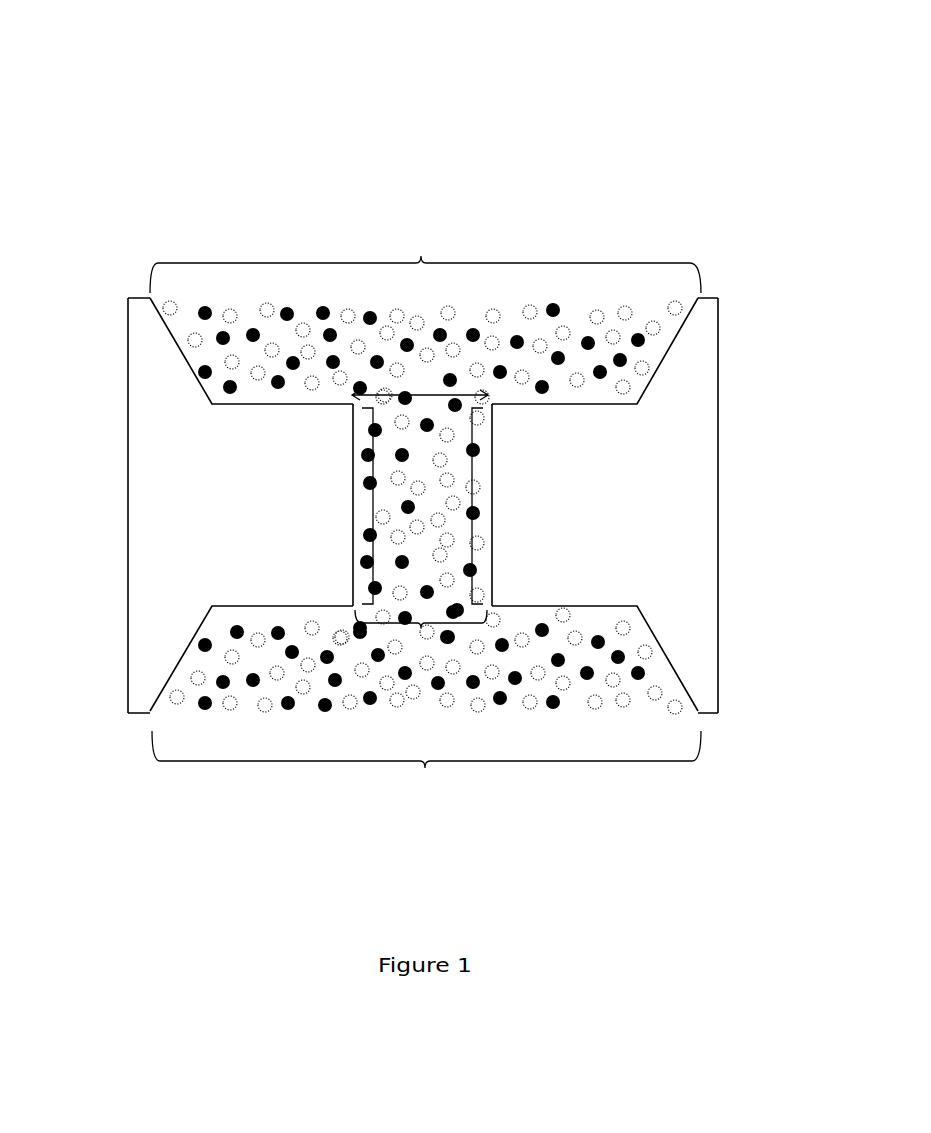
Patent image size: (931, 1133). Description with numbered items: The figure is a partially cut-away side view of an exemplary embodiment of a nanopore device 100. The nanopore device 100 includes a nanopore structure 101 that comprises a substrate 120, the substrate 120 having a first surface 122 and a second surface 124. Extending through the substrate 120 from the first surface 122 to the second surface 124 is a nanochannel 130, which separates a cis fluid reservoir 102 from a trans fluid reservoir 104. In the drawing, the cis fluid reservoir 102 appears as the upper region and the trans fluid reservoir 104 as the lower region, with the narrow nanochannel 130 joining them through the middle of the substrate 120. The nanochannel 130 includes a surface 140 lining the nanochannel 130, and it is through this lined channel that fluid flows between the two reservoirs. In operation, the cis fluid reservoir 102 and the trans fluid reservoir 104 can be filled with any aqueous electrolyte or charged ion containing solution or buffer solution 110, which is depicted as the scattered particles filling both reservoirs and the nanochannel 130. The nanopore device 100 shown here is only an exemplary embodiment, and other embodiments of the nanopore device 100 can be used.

The nanopore device 100 is at (408, 97).
The nanopore structure 101 is at (750, 399).
The cis fluid reservoir 102 is at (421, 258).
The trans fluid reservoir 104 is at (425, 766).
The buffer solution 110 is at (469, 315).
The substrate 120 is at (128, 507).
The first surface 122 is at (143, 296).
The second surface 124 is at (143, 717).
The nanochannel 130 is at (421, 628).
The surface 140 is at (472, 507).